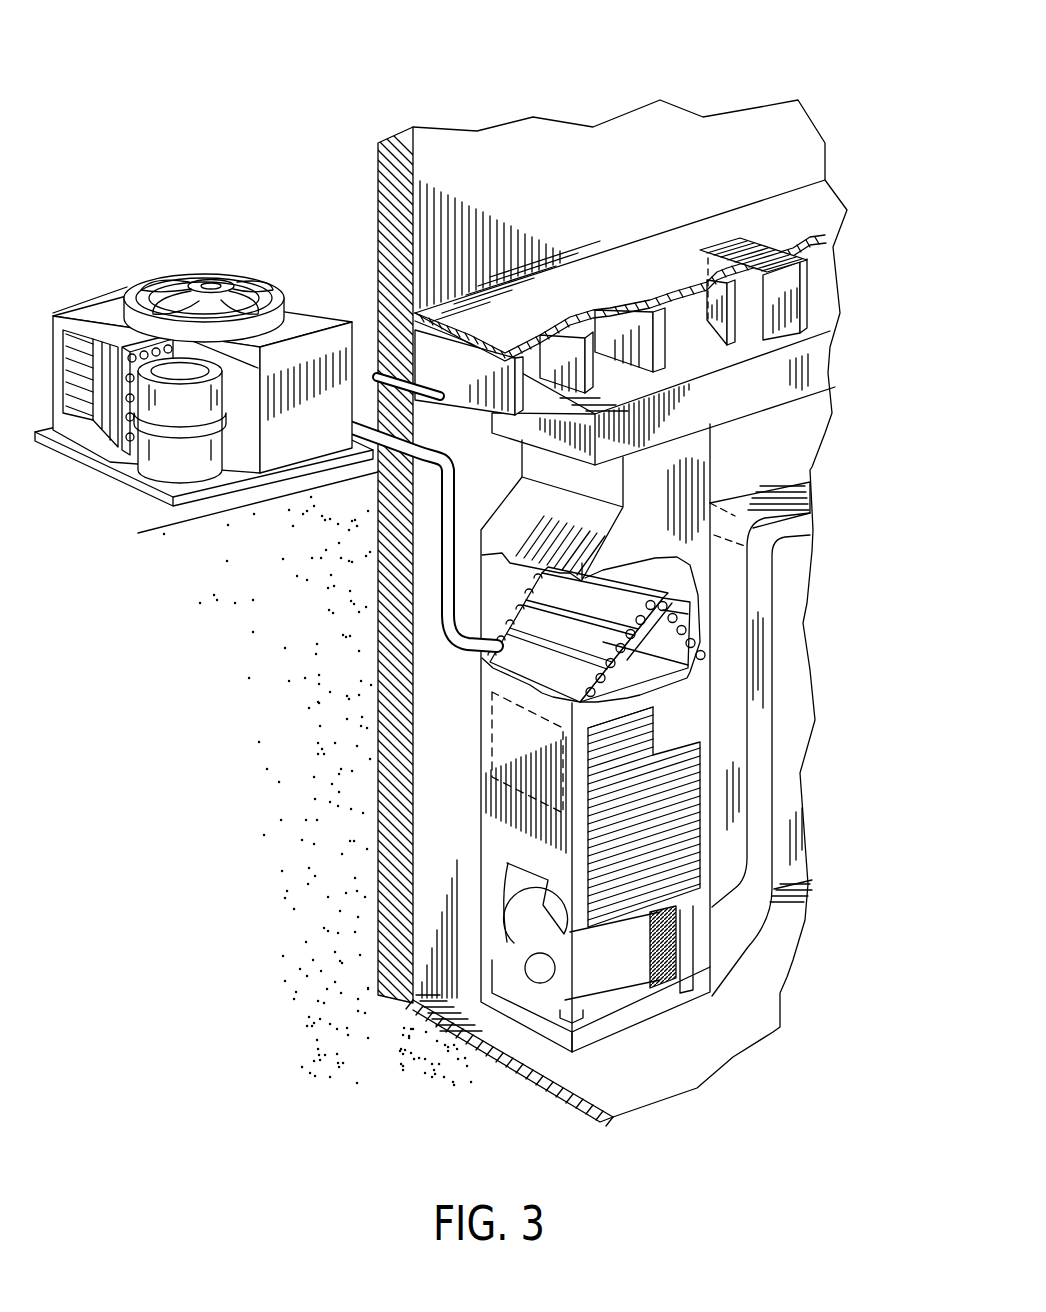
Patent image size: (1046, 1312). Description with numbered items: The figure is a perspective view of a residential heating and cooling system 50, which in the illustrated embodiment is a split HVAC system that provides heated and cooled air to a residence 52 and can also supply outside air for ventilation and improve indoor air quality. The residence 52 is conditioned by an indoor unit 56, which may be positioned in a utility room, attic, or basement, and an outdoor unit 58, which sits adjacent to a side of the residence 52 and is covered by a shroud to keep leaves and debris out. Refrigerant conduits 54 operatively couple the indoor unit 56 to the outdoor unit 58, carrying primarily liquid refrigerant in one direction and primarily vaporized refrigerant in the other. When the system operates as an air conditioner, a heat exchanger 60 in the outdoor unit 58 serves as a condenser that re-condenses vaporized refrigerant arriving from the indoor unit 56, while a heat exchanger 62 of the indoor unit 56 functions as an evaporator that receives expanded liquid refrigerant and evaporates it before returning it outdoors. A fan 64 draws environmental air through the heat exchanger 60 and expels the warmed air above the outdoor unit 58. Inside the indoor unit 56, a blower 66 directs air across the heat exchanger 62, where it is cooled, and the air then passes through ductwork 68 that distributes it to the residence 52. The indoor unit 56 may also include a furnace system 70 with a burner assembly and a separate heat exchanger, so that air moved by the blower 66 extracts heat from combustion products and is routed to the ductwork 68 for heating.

The residential heating and cooling system 50 is at (198, 95).
The residence 52 is at (520, 150).
The refrigerant conduits 54 is at (446, 540).
The indoor unit 56 is at (458, 794).
The outdoor unit 58 is at (159, 263).
The heat exchanger 60 is at (130, 354).
The heat exchanger 62 is at (542, 662).
The fan 64 is at (220, 280).
The blower 66 is at (533, 988).
The ductwork 68 is at (773, 328).
The furnace system 70 is at (490, 740).